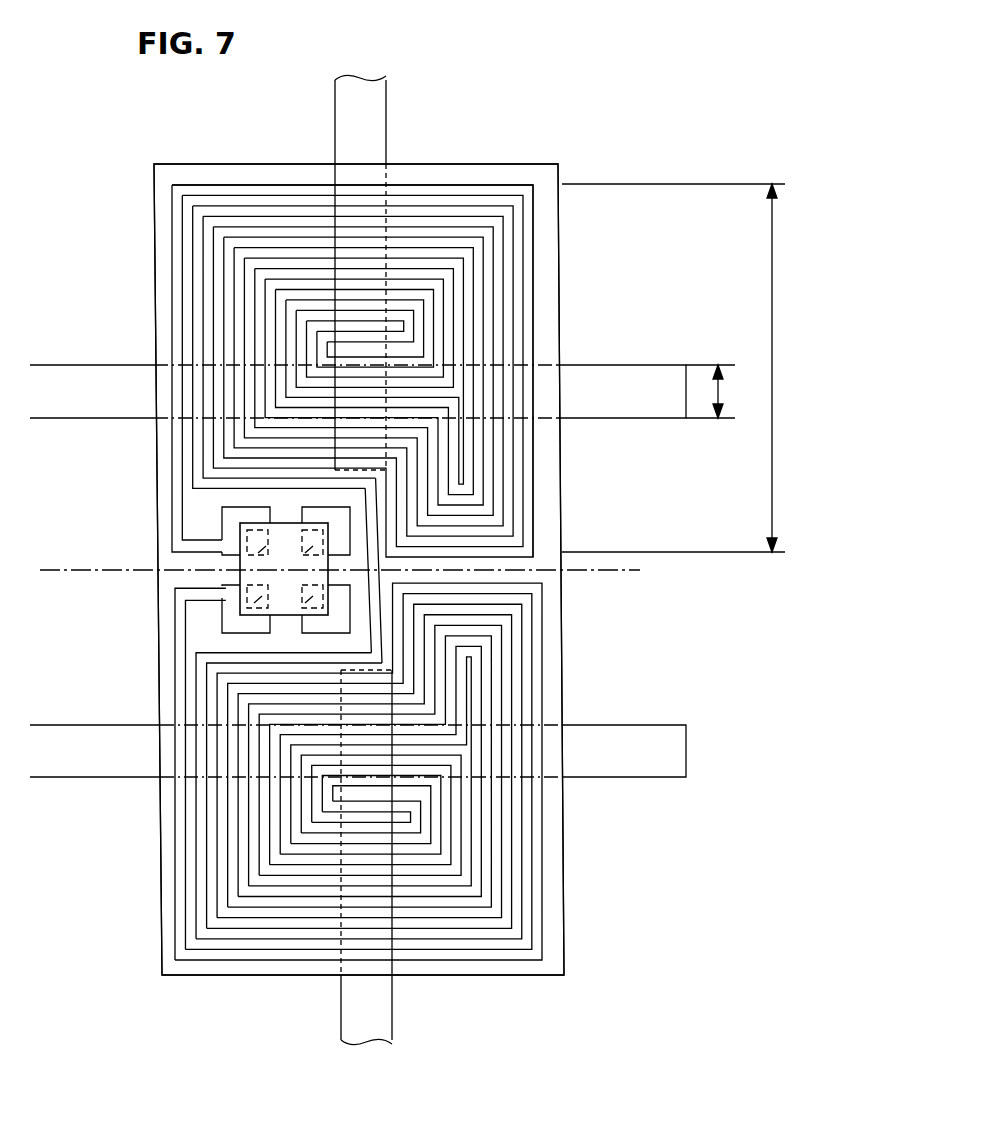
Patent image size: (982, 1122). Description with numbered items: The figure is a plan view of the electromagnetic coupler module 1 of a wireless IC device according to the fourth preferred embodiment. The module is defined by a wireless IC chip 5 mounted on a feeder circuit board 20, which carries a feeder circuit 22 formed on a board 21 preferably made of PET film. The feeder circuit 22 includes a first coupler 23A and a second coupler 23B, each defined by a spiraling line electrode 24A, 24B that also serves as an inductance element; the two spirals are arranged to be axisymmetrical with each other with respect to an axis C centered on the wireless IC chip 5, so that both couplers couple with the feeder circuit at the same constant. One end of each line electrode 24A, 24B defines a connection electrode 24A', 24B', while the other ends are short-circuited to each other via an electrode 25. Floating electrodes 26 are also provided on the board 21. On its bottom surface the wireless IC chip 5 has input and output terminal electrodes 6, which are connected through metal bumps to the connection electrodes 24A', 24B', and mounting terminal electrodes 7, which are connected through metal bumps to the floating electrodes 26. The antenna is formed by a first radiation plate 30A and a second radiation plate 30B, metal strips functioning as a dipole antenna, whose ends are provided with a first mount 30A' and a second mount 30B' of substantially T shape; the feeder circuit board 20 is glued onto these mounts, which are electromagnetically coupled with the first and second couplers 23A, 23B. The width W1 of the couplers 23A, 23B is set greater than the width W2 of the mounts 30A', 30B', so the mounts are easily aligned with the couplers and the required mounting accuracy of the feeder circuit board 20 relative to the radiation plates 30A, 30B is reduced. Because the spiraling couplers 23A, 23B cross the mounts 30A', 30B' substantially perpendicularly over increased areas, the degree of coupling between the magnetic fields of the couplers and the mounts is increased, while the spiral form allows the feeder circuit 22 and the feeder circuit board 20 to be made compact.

The electromagnetic coupler module 1 is at (622, 116).
The wireless IC chip 5 is at (285, 520).
The input and output terminal electrodes 6 is at (252, 548).
The mounting terminal electrodes 7 is at (258, 562).
The feeder circuit board 20 is at (578, 855).
The board 21 is at (155, 215).
The feeder circuit 22 is at (540, 284).
The first coupler 23A is at (297, 266).
The second coupler 23B is at (280, 880).
The line electrode 24A is at (358, 362).
The line electrode 24B is at (358, 785).
The connection electrode 24A' is at (162, 522).
The connection electrode 24B' is at (155, 613).
The electrode 25 is at (374, 548).
The floating electrodes 26 is at (340, 522).
The first radiation plate 30A is at (409, 272).
The second radiation plate 30B is at (421, 857).
The first mount 30A' is at (494, 397).
The second mount 30B' is at (497, 696).
The width of the first and second couplers W1 is at (694, 368).
The width of the first and second mounts W2 is at (726, 391).
The axis C is at (353, 577).